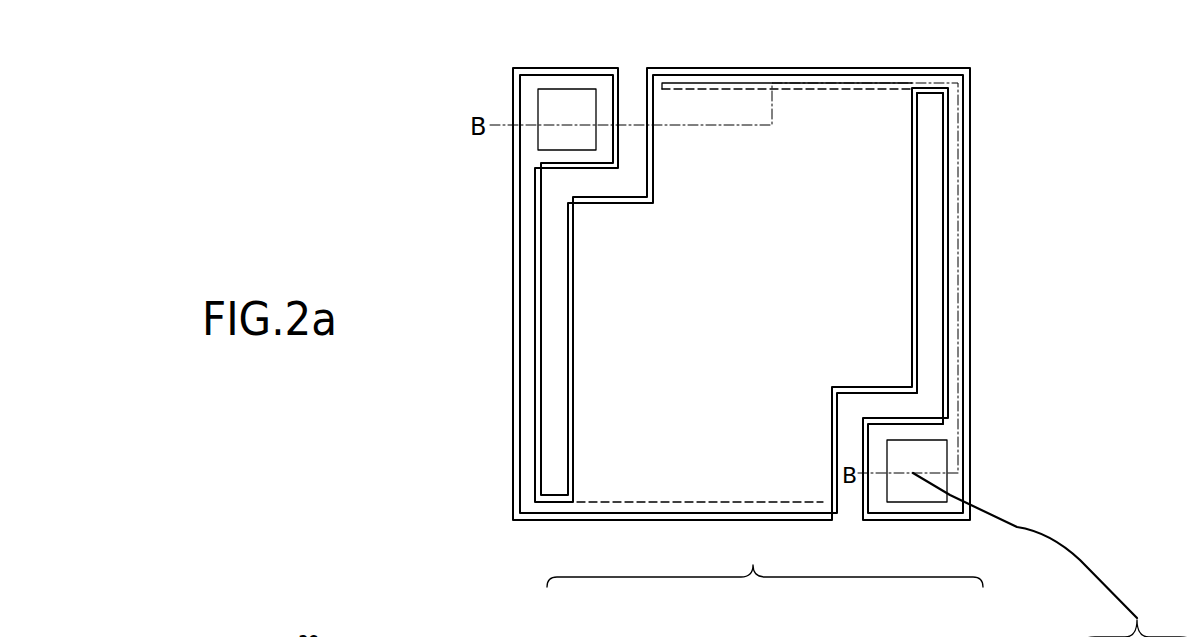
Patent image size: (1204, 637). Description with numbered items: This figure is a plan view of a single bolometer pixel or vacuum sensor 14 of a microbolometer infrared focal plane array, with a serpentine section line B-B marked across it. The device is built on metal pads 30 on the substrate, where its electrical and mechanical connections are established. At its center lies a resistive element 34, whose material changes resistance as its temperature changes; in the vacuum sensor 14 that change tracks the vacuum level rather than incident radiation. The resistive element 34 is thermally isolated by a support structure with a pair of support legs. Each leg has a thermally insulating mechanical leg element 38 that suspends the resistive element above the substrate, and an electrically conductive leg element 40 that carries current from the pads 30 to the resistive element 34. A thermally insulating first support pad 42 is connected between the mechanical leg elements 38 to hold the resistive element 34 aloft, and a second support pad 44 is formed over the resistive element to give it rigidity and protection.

The vacuum sensor 14 is at (779, 352).
The metal pads 30 is at (558, 112).
The resistive element 34 is at (753, 567).
The mechanical leg element 38 is at (512, 205).
The electrically conductive leg element 40 is at (533, 222).
The first support pad 42 is at (912, 303).
The second support pad 44 is at (812, 636).